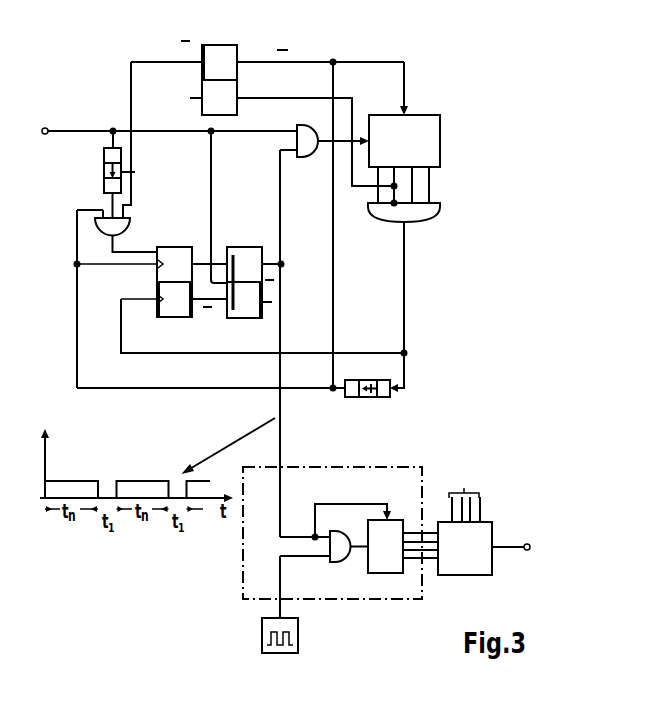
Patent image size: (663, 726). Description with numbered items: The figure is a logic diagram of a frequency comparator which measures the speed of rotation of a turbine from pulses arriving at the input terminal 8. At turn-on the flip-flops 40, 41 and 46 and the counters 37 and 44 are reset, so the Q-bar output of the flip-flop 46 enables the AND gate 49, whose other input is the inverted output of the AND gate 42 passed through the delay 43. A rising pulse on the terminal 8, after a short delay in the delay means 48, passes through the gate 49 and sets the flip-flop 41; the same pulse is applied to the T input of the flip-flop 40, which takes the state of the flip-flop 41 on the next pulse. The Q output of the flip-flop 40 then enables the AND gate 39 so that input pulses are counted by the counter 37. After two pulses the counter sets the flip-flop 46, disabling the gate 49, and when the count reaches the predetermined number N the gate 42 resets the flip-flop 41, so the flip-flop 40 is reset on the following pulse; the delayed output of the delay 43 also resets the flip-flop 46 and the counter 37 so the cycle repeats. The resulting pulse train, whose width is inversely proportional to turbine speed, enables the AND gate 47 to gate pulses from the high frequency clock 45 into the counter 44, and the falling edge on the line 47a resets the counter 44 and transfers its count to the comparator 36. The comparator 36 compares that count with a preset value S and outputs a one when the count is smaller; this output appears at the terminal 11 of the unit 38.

The input terminal 8 is at (162, 134).
The flip-flop 46 is at (218, 46).
The delay means 48 is at (104, 160).
The AND gate 49 is at (129, 229).
The flip-flop 41 is at (175, 247).
The flip-flop 40 is at (245, 247).
The AND gate 39 is at (306, 157).
The counter 37 is at (440, 141).
The AND gate 42 is at (441, 211).
The delay 43 is at (365, 397).
The time base unit 38 is at (404, 599).
The AND gate 47 is at (330, 560).
The line 47a is at (349, 497).
The counter 44 is at (390, 520).
The high frequency clock 45 is at (298, 635).
The comparator 36 is at (457, 565).
The output terminal 11 is at (530, 547).